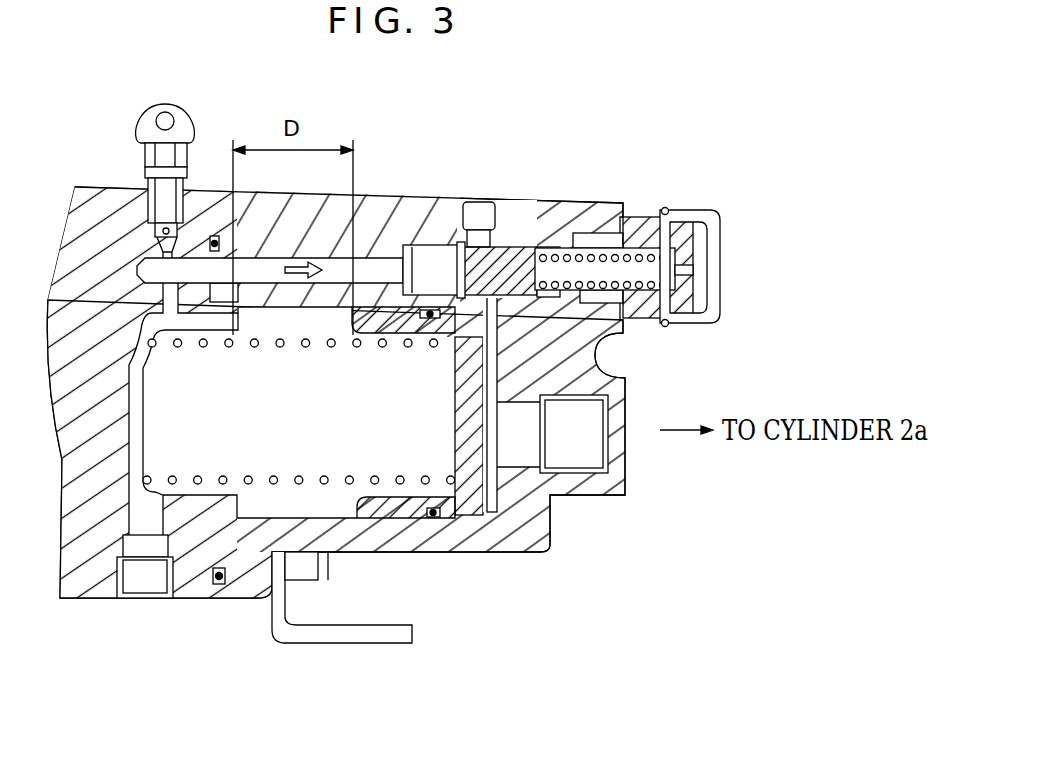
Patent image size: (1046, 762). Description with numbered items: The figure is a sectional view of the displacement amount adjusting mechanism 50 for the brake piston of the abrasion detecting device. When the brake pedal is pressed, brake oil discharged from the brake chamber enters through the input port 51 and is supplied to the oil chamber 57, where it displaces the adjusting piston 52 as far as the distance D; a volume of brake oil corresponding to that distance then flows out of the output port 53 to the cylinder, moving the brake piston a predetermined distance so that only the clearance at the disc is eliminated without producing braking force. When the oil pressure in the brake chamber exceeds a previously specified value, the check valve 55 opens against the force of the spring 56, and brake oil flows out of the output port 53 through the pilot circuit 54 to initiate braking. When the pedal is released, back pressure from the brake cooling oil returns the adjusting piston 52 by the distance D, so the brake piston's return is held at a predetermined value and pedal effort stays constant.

The displacement amount adjusting mechanism 50 is at (597, 548).
The input port 51 is at (148, 600).
The adjusting piston 52 is at (452, 513).
The output port 53 is at (620, 440).
The pilot circuit 54 is at (382, 265).
The check valve 55 is at (500, 250).
The spring 56 is at (633, 258).
The oil chamber 57 is at (335, 470).